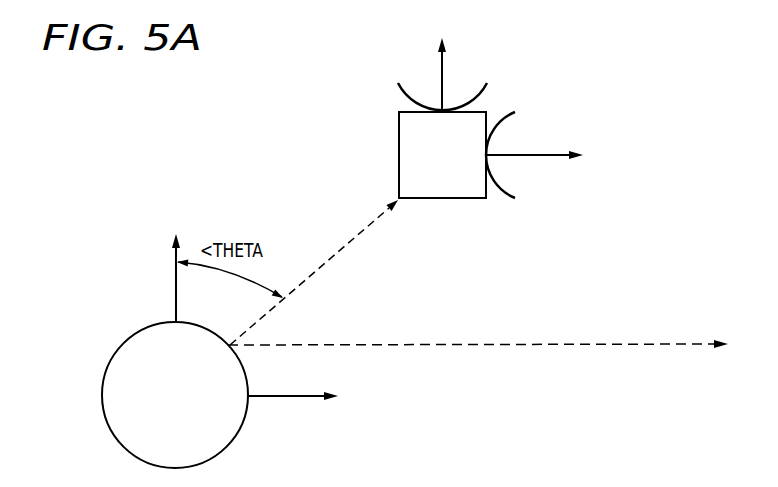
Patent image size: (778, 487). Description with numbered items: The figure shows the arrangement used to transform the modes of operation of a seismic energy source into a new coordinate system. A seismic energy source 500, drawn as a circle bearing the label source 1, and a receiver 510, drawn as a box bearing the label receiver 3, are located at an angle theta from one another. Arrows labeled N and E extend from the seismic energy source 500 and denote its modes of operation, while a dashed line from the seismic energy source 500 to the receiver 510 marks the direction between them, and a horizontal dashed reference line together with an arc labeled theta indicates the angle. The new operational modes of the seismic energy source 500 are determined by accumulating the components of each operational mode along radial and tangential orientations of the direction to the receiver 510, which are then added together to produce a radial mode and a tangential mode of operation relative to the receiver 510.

The seismic energy source 500 is at (178, 351).
The receiver 510 is at (502, 139).
The source SRC 1 is at (175, 395).
The receiver R3 3 is at (442, 155).